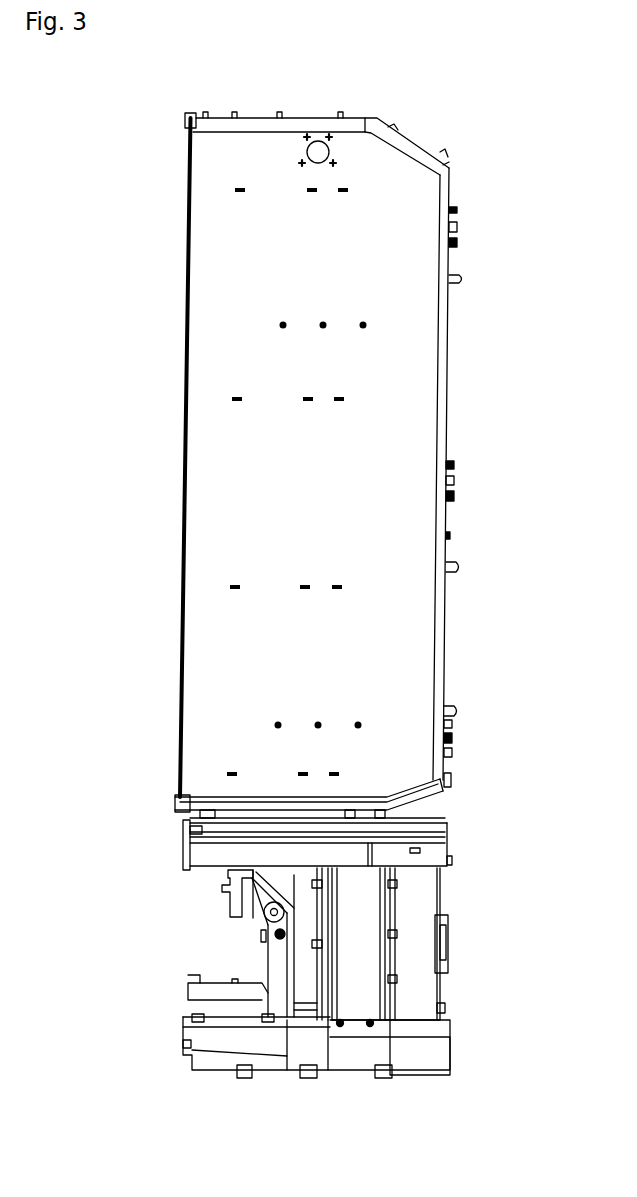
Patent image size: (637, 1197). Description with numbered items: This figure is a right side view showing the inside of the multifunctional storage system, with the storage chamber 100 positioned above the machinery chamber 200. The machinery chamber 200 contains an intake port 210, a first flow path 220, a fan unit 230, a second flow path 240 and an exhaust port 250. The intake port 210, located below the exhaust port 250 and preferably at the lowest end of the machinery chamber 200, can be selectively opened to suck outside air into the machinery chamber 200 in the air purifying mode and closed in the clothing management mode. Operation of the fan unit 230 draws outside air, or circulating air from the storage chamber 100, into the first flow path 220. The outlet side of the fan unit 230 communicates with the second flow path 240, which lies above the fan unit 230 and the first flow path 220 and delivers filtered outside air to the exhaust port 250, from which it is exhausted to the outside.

The storage chamber 100 is at (202, 428).
The machinery chamber 200 is at (270, 944).
The intake port 210 is at (193, 1028).
The first flow path 220 is at (308, 968).
The fan unit 230 is at (427, 903).
The second flow path 240 is at (427, 857).
The exhaust port 250 is at (183, 846).